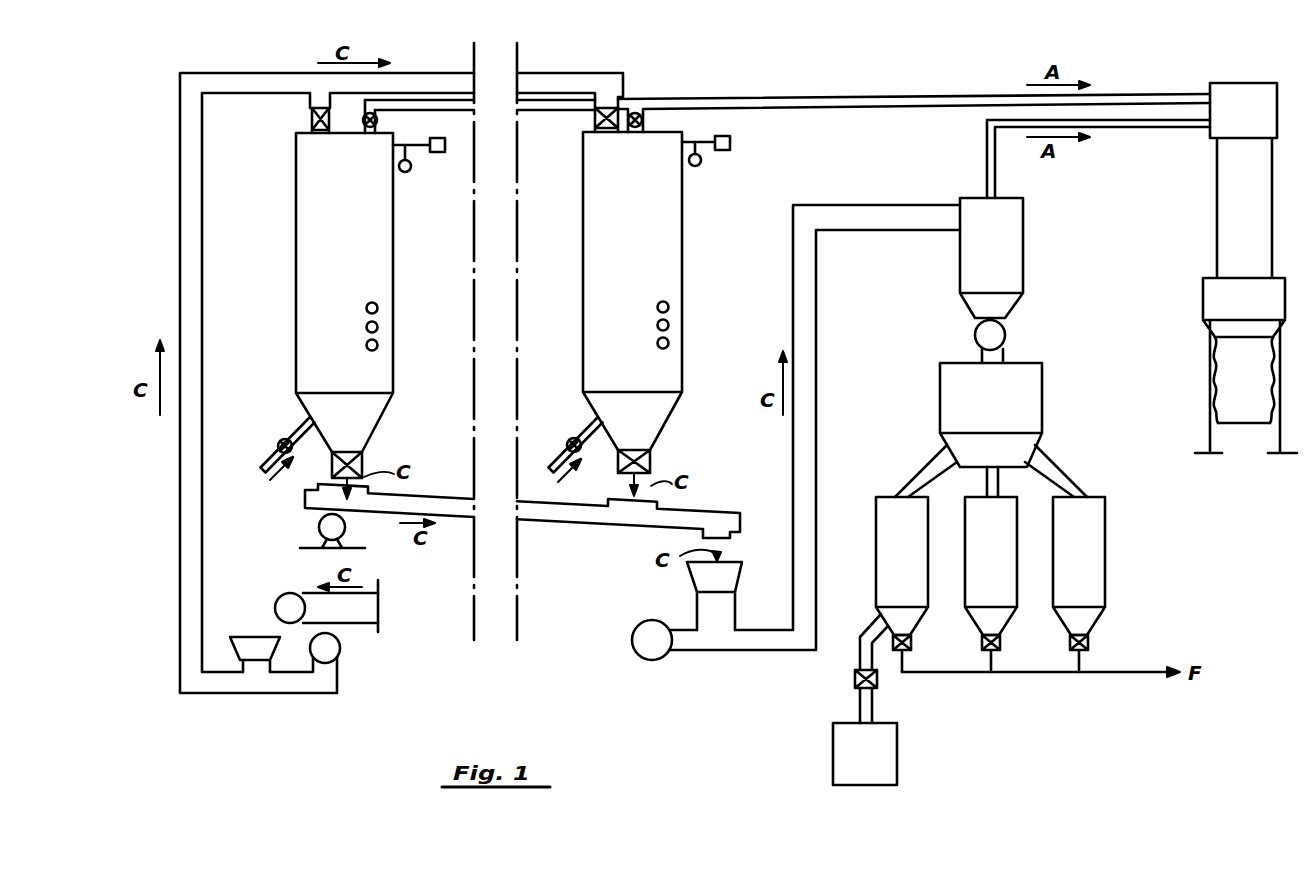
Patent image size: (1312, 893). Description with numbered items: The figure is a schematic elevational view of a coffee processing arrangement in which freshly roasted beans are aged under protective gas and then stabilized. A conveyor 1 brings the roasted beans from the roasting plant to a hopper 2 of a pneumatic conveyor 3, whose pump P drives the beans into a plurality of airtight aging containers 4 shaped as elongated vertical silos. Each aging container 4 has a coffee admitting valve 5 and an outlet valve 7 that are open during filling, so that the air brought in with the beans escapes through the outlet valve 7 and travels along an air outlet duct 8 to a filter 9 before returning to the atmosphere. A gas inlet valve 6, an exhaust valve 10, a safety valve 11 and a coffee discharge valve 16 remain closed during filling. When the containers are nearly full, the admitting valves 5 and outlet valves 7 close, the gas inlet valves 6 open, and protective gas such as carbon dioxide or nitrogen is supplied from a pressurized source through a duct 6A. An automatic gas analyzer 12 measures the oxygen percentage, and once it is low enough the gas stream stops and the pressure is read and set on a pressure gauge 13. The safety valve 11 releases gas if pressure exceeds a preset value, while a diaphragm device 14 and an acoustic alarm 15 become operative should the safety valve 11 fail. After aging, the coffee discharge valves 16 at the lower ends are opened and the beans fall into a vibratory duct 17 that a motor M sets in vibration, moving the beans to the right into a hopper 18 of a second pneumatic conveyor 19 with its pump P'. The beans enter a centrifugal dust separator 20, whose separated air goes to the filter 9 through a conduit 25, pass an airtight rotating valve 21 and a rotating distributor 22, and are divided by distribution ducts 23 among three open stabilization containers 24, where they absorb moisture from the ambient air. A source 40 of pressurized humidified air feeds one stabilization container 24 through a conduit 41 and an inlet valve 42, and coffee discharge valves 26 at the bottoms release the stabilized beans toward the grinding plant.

The conveyor 1 is at (302, 594).
The hopper 2 is at (252, 644).
The pneumatic conveyor 3 is at (203, 356).
The aging container 4 is at (298, 178).
The coffee admitting valve 5 is at (310, 118).
The gas inlet valve 6 is at (284, 438).
The duct or conduit 6A is at (277, 447).
The outlet valve 7 is at (379, 121).
The air outlet duct 8 is at (815, 100).
The filter 9 is at (1216, 216).
The exhaust valve 10 is at (417, 147).
The safety valve 11 is at (405, 172).
The automatic gas analyzer 12 is at (446, 146).
The pressure gauge 13 is at (378, 305).
The diaphragm device 14 is at (378, 326).
The acoustic alarm 15 is at (378, 345).
The coffee discharge valve 16 is at (364, 468).
The vibratory duct or conveyor 17 is at (446, 500).
The hopper 18 is at (726, 576).
The pneumatic conveyor 19 is at (860, 205).
The centrifugal dust separator 20 is at (1010, 237).
The airtight rotating valve 21 is at (996, 339).
The rotating distributor 22 is at (1020, 400).
The distribution duct 23 is at (1058, 468).
The stabilization or adjusting container 24 is at (1093, 540).
The duct or conduit 25 is at (1157, 122).
The coffee discharge valve 26 is at (1090, 645).
The source of pressurized humidified air 40 is at (897, 757).
The duct or conduit 41 is at (878, 622).
The inlet valve 42 is at (880, 680).
The motor M is at (319, 528).
The pump P is at (356, 651).
The pump P' is at (638, 662).